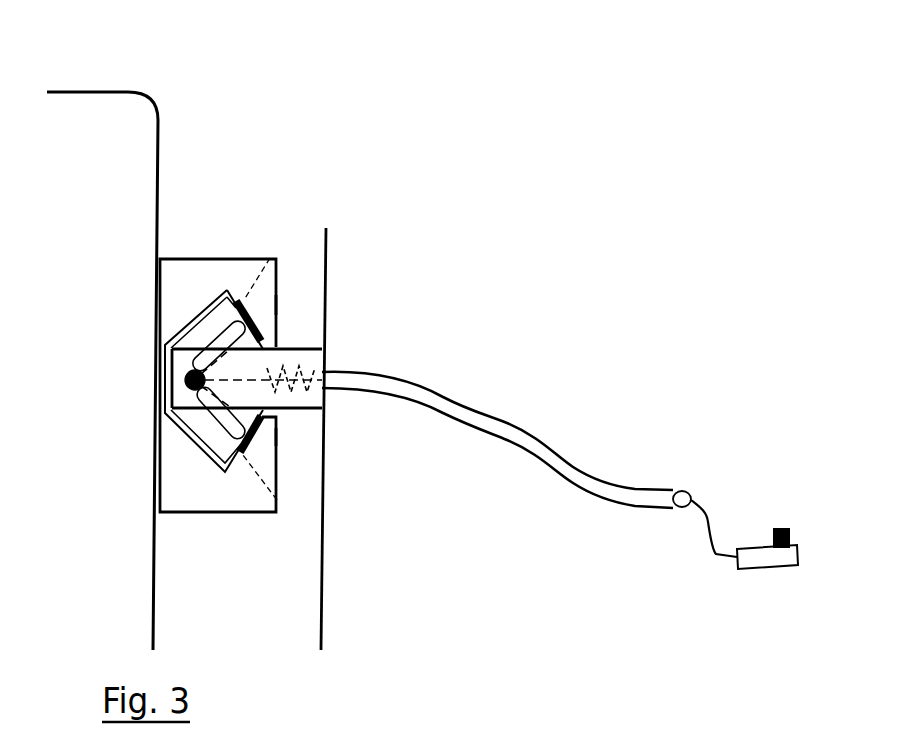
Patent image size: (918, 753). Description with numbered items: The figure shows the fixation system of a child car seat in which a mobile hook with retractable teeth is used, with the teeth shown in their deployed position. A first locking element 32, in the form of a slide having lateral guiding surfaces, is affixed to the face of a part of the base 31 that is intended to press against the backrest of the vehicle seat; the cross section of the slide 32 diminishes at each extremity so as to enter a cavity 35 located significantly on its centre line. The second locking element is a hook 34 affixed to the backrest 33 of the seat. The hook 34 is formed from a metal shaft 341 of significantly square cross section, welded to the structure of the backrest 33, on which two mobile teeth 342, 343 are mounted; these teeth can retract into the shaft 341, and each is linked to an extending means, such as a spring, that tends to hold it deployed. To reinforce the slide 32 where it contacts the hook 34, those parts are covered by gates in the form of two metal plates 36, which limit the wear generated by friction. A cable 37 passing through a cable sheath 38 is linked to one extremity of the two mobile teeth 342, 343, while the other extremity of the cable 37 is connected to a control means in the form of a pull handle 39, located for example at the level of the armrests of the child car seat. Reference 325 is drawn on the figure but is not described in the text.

The base 31 is at (102, 133).
The first locking element (slide) 32 is at (188, 513).
The backrest 33 is at (323, 428).
The hook 34 is at (277, 338).
The shaft 341 is at (297, 349).
The mobile tooth 342 is at (242, 298).
The mobile tooth 343 is at (218, 490).
The cavity 35 is at (204, 305).
The metal plates 36 is at (270, 257).
The openings 325 is at (276, 305).
The cable 37 is at (712, 522).
The cable sheath 38 is at (546, 458).
The pull handle 39 is at (762, 558).